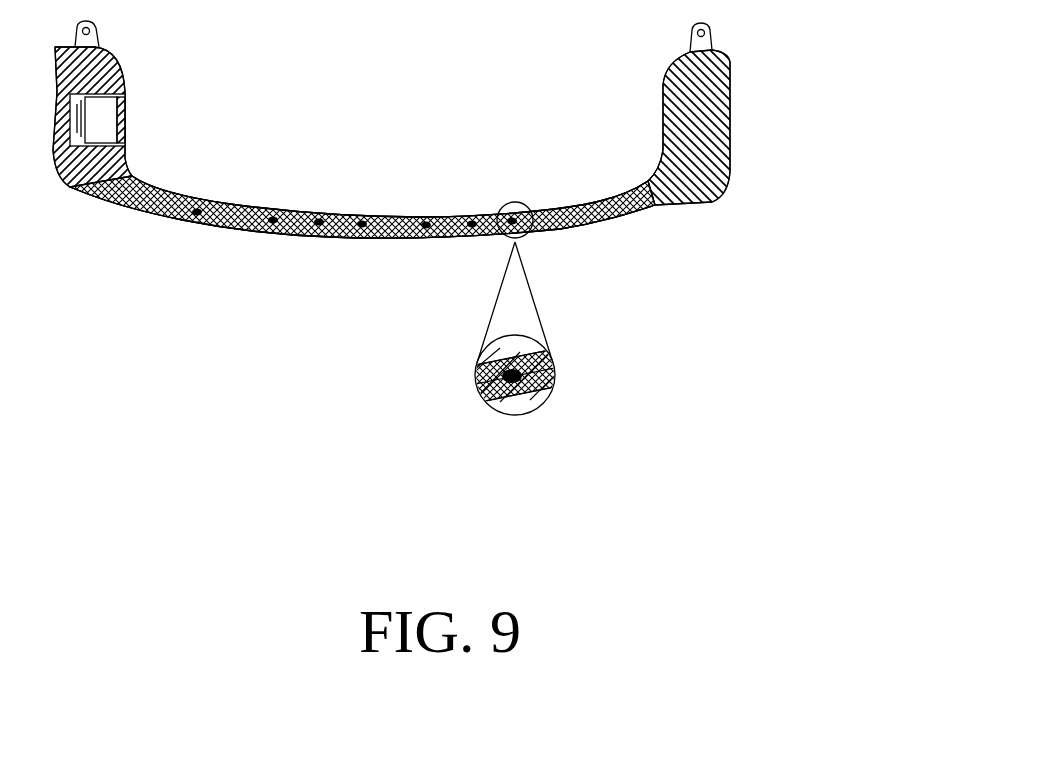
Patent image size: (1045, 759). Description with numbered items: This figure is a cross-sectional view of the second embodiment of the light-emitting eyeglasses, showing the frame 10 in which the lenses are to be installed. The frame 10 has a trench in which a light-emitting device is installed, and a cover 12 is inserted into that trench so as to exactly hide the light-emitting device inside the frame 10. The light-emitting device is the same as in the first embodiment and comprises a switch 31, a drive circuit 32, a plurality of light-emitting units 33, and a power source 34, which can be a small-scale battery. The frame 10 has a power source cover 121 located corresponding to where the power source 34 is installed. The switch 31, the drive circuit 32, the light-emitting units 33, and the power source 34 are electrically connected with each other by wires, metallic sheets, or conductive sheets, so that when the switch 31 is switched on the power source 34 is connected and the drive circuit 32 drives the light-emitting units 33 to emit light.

The frame 10 is at (740, 150).
The cover 12 is at (362, 289).
The switch 31 is at (198, 216).
The drive circuit 32 is at (476, 375).
The light-emitting unit 33 is at (362, 222).
The power source 34 is at (97, 118).
The power source cover 121 is at (123, 133).